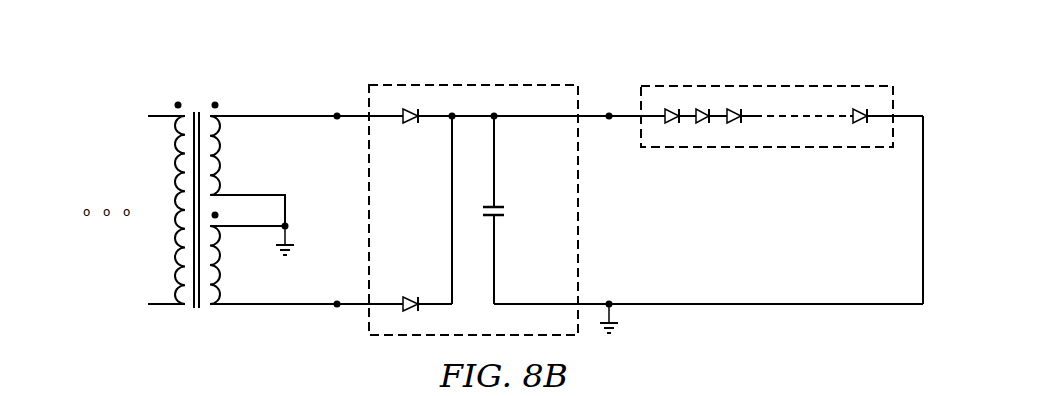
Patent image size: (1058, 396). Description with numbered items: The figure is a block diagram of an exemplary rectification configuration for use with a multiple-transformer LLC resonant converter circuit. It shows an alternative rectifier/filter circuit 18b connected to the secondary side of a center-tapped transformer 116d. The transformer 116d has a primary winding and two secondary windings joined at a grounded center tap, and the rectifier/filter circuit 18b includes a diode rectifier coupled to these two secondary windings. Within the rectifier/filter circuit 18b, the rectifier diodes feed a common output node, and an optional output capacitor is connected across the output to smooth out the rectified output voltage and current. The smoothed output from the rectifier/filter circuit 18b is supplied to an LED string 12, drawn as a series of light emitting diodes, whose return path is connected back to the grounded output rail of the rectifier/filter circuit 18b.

The center-tapped transformer 116d is at (197, 93).
The rectifier/filter circuit 18b is at (472, 78).
The LED string 12 is at (787, 77).